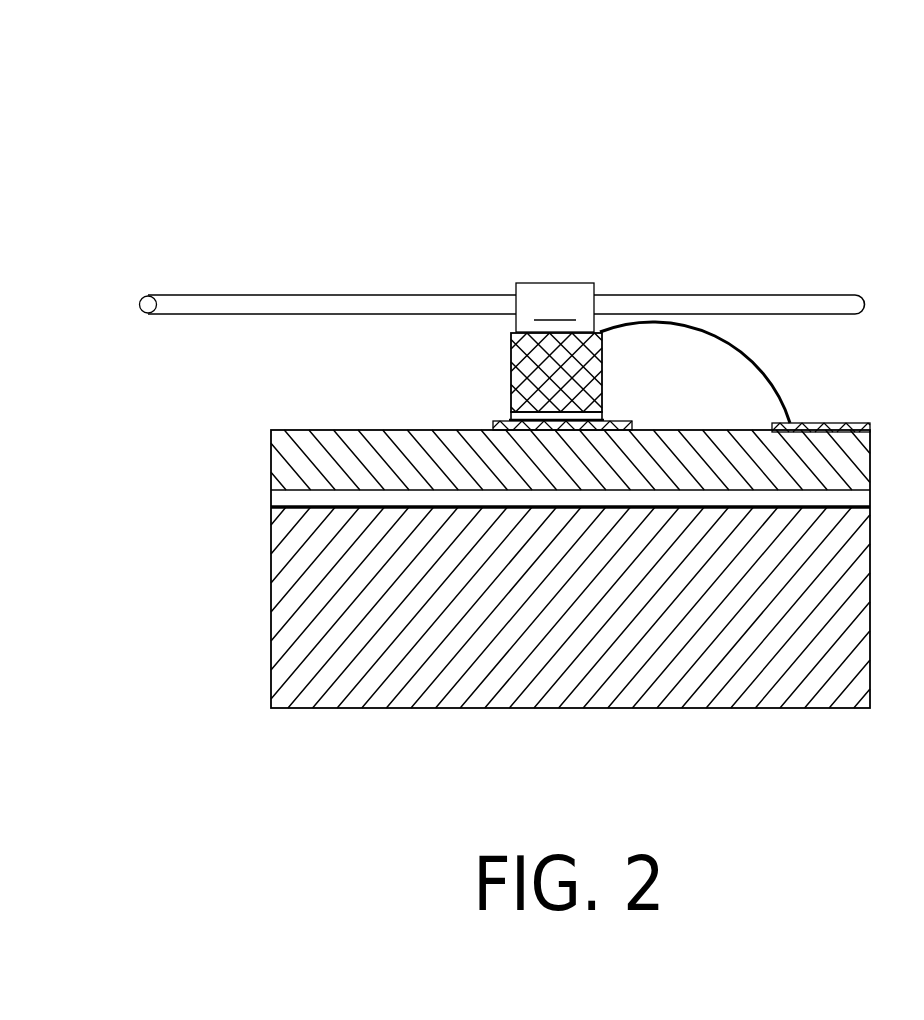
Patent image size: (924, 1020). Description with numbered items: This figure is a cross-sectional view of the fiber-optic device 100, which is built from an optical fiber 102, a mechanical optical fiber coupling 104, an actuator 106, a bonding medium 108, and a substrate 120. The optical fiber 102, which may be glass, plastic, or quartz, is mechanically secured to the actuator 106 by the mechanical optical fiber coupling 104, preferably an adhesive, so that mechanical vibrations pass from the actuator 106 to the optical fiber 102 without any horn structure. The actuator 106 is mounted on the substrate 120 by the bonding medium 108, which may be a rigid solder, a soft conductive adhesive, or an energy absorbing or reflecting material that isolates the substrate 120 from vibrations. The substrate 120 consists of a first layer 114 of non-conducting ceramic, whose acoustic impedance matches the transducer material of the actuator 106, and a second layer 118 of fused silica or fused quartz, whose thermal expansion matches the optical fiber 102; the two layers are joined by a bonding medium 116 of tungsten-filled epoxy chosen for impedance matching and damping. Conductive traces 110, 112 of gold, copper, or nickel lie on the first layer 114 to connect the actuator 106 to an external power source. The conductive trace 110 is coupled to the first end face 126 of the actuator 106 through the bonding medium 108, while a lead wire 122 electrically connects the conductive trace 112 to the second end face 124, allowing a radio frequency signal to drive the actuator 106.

The fiber-optic device 100 is at (268, 152).
The optical fiber 102 is at (752, 295).
The mechanical optical fiber coupling 104 is at (555, 307).
The actuator 106 is at (601, 400).
The bonding medium 108 is at (503, 418).
The conductive trace 110 is at (632, 421).
The conductive trace 112 is at (795, 422).
The first layer 114 is at (271, 462).
The bonding medium 116 is at (271, 500).
The second layer 118 is at (271, 618).
The substrate 120 is at (292, 415).
The lead wire 122 is at (765, 368).
The second end face 124 is at (495, 335).
The first end face 126 is at (497, 415).